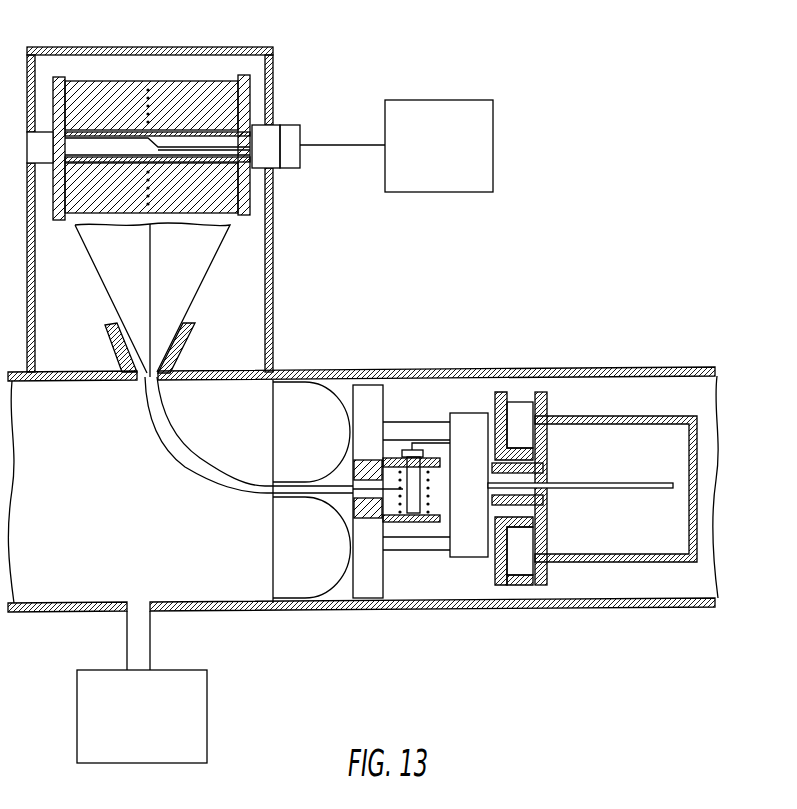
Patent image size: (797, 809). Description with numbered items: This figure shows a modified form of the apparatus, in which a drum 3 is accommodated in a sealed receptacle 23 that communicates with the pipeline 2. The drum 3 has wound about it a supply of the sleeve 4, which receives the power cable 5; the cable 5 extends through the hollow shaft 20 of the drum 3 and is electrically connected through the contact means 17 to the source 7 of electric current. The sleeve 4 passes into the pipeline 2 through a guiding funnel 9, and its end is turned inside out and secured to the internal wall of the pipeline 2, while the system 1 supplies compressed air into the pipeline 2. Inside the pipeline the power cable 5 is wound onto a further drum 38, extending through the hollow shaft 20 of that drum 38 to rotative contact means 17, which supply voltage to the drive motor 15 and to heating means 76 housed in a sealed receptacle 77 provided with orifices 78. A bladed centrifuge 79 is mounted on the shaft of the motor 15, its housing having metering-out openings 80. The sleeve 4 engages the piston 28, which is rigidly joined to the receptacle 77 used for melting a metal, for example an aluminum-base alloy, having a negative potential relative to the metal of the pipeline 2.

The system 1 is at (142, 687).
The pipeline 2 is at (652, 368).
The drum 3 is at (103, 90).
The sleeve 4 is at (202, 277).
The power cable 5 is at (163, 308).
The source of electric current 7 is at (439, 146).
The guiding funnel 9 is at (180, 345).
The drive motor 15 is at (468, 548).
The contact means 17 is at (277, 128).
The hollow shaft 20 is at (162, 130).
The sealed receptacle 23 is at (60, 77).
The piston 28 is at (368, 600).
The drum 38 is at (398, 525).
The heating means 76 is at (577, 490).
The sealed receptacle 77 is at (585, 416).
The orifices 78 is at (552, 548).
The bladed centrifuge 79 is at (495, 410).
The metering-out openings 80 is at (512, 588).